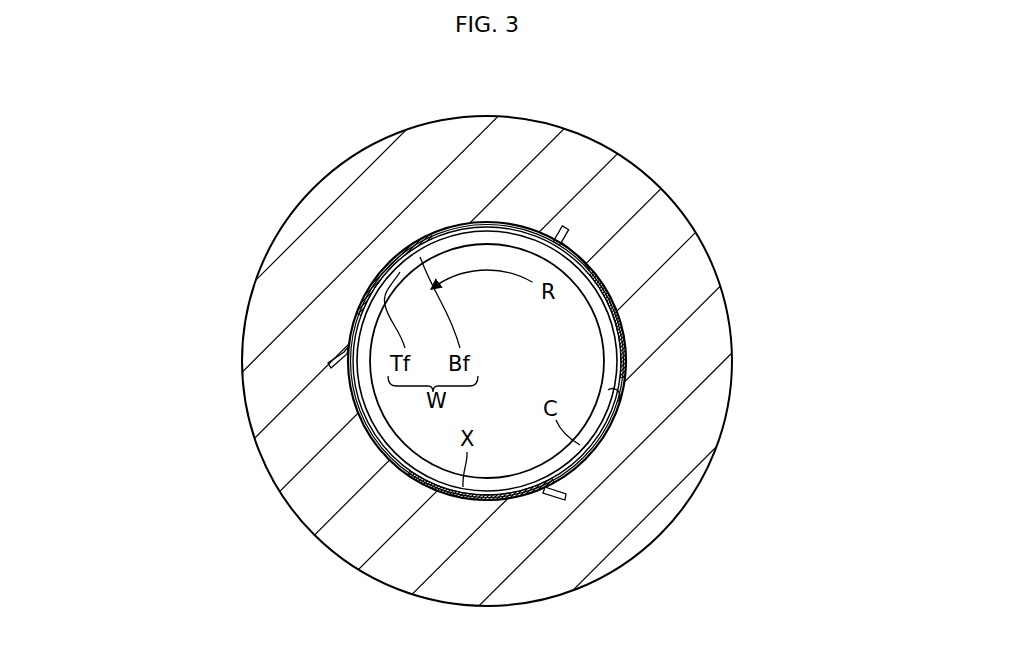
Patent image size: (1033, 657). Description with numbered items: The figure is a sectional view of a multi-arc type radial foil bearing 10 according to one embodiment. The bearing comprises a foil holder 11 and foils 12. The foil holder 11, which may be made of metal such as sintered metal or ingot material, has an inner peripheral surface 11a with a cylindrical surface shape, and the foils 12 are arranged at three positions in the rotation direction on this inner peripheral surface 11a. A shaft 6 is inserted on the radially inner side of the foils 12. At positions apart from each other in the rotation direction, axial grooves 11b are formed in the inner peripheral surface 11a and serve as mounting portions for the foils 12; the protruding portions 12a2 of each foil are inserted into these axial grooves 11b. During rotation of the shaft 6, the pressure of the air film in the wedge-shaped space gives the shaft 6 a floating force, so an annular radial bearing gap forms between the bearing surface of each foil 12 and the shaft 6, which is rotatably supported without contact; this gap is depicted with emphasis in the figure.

The multi-arc type radial foil bearing 10 is at (704, 159).
The foil holder 11 is at (392, 179).
The inner peripheral surface 11a is at (614, 403).
The axial grooves 11b is at (563, 231).
The foils 12 is at (487, 219).
The protruding portions 12a2 is at (574, 238).
The shaft 6 is at (578, 340).